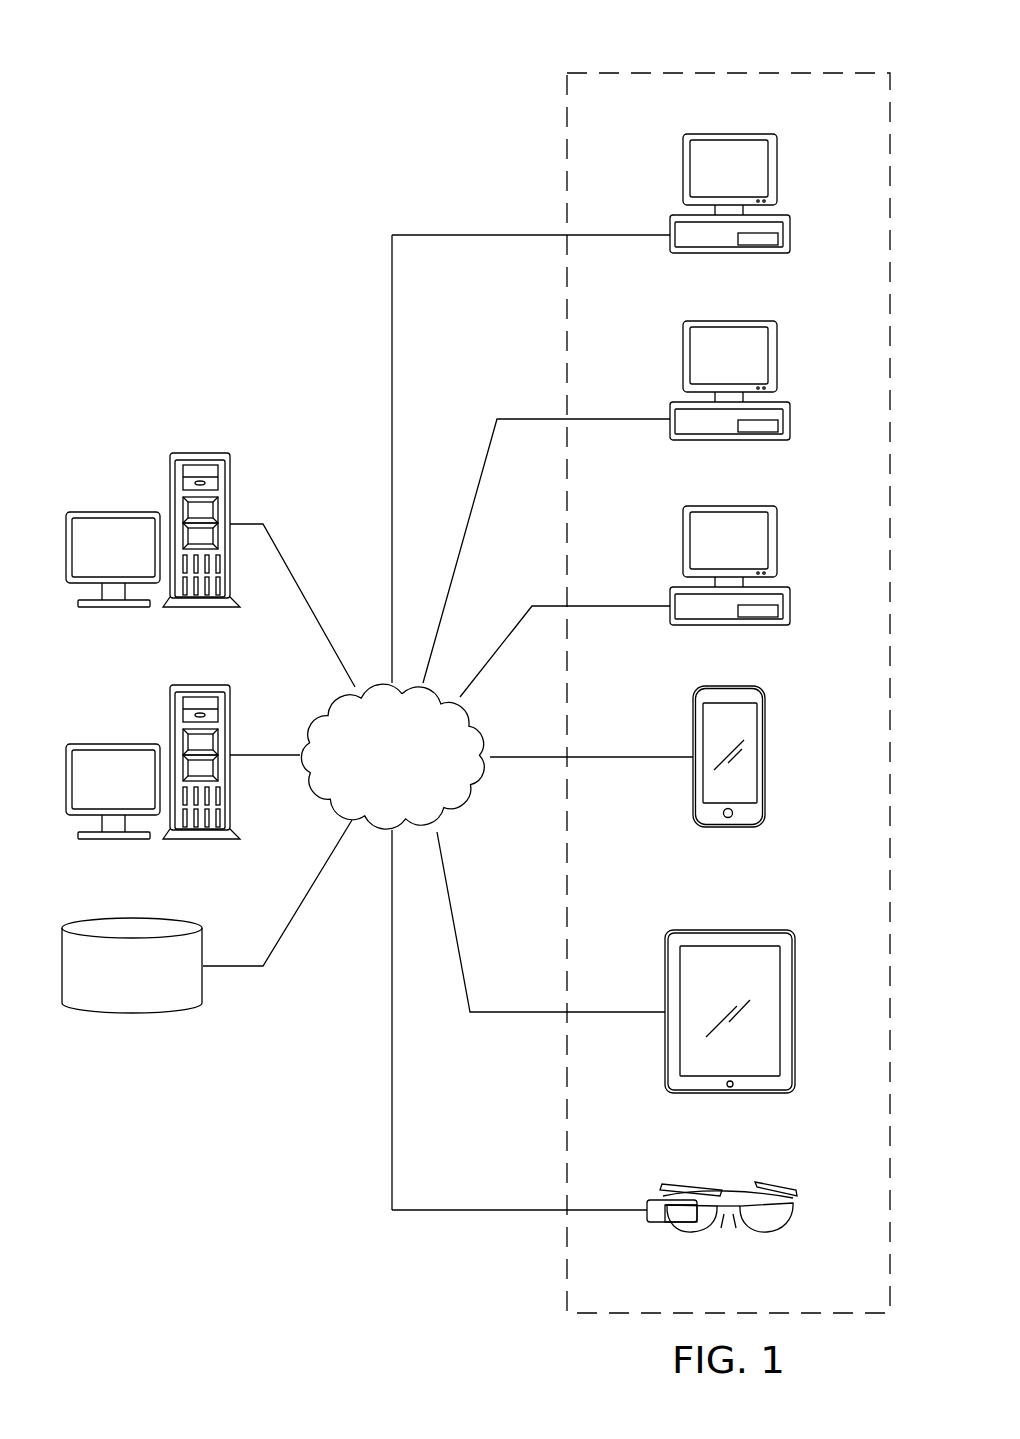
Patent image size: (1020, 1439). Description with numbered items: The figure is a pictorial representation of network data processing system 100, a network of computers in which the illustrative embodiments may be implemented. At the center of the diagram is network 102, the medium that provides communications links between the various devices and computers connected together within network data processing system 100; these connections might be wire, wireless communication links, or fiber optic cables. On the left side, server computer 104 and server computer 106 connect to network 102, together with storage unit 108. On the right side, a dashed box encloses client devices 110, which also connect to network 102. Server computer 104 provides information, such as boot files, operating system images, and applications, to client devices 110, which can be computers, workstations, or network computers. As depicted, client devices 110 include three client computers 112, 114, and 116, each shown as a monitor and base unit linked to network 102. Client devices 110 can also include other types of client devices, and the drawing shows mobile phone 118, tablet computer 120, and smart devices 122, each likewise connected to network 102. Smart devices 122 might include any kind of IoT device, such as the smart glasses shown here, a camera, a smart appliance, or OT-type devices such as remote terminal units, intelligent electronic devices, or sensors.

The network data processing system 100 is at (250, 322).
The network 102 is at (415, 790).
The server computer 104 is at (113, 512).
The server computer 106 is at (113, 745).
The storage unit 108 is at (132, 1015).
The client devices 110 is at (803, 62).
The client computer 112 is at (777, 170).
The client computer 114 is at (777, 356).
The client computer 116 is at (777, 541).
The mobile phone 118 is at (765, 775).
The tablet computer 120 is at (795, 1024).
The smart devices 122 is at (795, 1212).